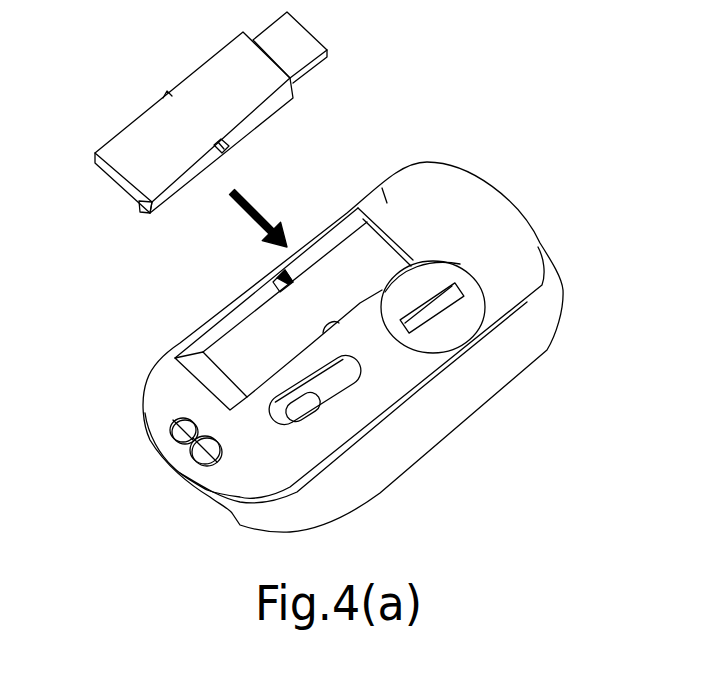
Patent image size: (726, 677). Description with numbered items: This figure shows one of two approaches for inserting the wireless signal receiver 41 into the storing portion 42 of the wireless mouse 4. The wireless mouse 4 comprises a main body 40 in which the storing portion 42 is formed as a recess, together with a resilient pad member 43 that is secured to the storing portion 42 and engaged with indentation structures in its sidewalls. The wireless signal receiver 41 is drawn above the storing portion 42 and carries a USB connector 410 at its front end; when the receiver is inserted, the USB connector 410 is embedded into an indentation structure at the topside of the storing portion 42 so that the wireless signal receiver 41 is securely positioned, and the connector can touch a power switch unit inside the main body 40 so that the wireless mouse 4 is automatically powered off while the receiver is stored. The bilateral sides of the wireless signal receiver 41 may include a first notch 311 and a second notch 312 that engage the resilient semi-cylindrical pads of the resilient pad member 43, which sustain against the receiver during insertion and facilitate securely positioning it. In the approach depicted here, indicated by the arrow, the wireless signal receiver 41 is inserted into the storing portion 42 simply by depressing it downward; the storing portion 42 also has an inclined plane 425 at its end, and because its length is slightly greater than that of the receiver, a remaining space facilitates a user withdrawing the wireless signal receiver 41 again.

The wireless mouse 4 is at (533, 168).
The main body 40 is at (437, 422).
The wireless signal receiver 41 is at (227, 67).
The USB connector 410 is at (290, 50).
The first notch 311 is at (168, 92).
The second notch 312 is at (228, 152).
The storing portion 42 is at (262, 332).
The inclined plane 425 is at (217, 375).
The resilient pad member 43 is at (337, 322).